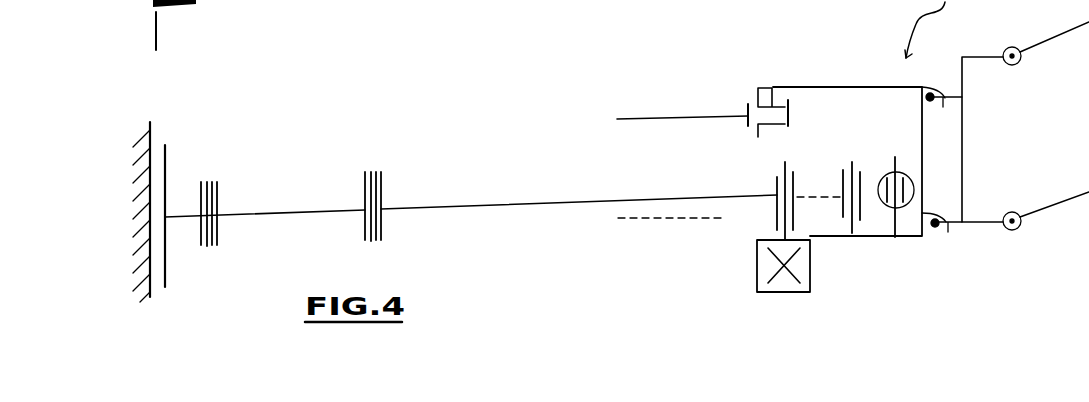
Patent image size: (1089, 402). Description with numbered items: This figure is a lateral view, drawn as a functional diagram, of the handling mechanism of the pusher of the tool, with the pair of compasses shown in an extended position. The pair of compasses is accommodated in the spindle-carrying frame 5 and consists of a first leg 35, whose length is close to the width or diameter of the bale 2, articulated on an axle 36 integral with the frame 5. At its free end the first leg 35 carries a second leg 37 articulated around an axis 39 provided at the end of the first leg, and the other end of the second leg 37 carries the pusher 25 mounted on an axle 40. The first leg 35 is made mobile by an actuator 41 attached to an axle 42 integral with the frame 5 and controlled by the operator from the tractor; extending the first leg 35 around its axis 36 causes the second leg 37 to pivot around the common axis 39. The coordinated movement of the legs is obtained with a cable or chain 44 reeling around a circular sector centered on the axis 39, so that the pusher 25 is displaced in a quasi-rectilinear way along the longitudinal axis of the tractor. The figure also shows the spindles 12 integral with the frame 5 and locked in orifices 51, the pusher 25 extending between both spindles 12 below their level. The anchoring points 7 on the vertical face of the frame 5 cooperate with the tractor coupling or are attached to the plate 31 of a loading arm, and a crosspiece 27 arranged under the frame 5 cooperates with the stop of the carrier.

The bale 2 is at (129, 156).
The pusher 25 is at (165, 160).
The axle 40 is at (208, 180).
The second leg 37 is at (290, 210).
The axis 39 is at (370, 165).
The first leg 35 is at (468, 204).
The spindles 12 is at (672, 118).
The orifices 51 is at (772, 100).
The axle 36 is at (703, 2).
The frame 5 is at (833, 87).
The anchoring points 7 is at (943, 102).
The plate 31 is at (962, 115).
The axle 42 is at (906, 160).
The actuator 41 is at (913, 183).
The cable or chain 44 is at (833, 197).
The crosspiece 27 is at (775, 266).